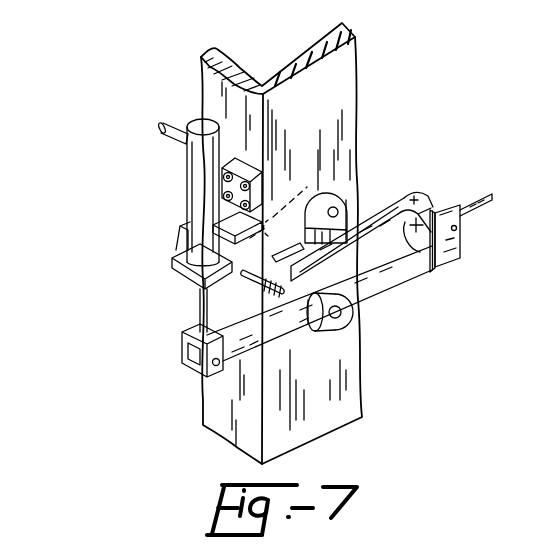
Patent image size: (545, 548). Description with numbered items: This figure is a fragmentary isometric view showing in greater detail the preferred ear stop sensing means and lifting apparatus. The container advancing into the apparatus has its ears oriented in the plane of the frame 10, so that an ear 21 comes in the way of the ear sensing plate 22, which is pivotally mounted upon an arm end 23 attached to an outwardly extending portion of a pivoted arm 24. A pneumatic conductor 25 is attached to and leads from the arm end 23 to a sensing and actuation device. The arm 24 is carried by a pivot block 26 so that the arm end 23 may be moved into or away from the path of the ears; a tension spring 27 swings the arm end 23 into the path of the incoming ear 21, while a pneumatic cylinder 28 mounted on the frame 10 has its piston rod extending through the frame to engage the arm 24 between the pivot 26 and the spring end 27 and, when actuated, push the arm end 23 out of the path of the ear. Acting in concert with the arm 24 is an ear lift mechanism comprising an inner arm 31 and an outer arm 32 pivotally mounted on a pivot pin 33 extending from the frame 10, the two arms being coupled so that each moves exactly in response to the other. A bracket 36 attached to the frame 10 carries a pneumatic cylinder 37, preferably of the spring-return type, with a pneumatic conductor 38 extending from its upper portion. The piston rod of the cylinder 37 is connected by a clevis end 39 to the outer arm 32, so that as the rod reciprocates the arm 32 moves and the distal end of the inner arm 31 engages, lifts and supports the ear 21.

The frame 10 is at (353, 60).
The ear 21 is at (420, 188).
The ear sensing plate 22 is at (440, 264).
The arm end 23 is at (462, 233).
The pivoted arm 24 is at (410, 196).
The pneumatic conductor 25 is at (486, 198).
The pivot block 26 is at (354, 142).
The spring 27 is at (250, 302).
The pneumatic cylinder 28 is at (309, 193).
The inner arm 31 is at (382, 292).
The outer arm 32 is at (285, 326).
The pivot pin 33 is at (352, 320).
The bracket 36 is at (176, 248).
The pneumatic cylinder 37 is at (187, 182).
The pneumatic conductor 38 is at (162, 130).
The clevis end 39 is at (183, 345).